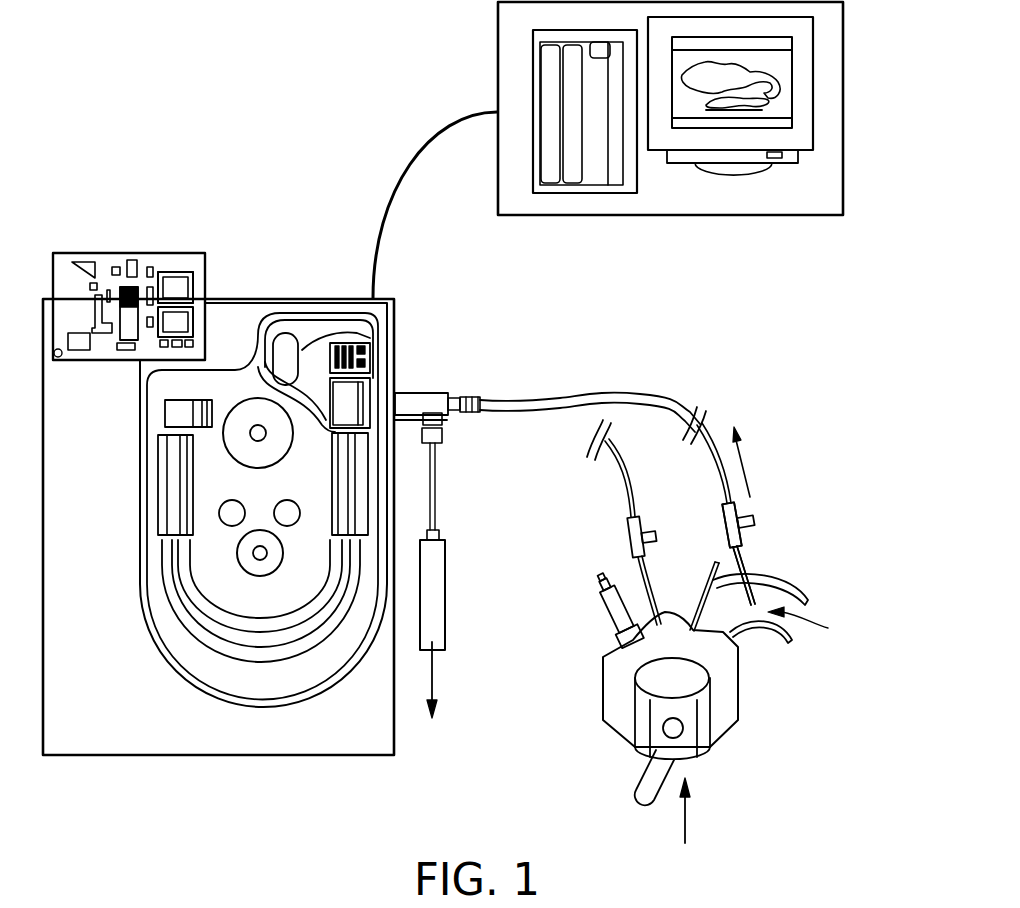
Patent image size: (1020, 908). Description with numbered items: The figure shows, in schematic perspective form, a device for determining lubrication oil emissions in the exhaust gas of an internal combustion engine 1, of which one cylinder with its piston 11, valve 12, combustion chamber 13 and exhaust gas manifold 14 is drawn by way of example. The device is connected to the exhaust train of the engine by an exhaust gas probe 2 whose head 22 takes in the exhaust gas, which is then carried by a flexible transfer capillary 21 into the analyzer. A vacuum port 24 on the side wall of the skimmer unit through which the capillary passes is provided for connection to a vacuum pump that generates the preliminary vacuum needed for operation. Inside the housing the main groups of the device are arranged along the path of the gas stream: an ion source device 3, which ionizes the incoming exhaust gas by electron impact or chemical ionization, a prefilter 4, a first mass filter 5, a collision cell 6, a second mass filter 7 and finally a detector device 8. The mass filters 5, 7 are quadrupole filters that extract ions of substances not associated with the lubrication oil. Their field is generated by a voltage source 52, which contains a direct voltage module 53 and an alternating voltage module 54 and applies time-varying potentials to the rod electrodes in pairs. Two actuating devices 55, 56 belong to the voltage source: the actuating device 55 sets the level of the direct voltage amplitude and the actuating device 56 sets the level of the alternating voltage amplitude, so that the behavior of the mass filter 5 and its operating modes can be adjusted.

The internal combustion engine 1 is at (687, 827).
The exhaust gas probe 2 is at (708, 392).
The ion source device 3 is at (368, 338).
The prefilter 4 is at (370, 393).
The first mass filter 5 is at (342, 503).
The collision cell 6 is at (288, 650).
The second mass filter 7 is at (172, 503).
The detector device 8 is at (165, 410).
The piston 11 is at (667, 743).
The valve 12 is at (693, 637).
The combustion chamber 13 is at (653, 653).
The exhaust gas manifold 14 is at (783, 610).
The flexible transfer capillary 21 is at (552, 400).
The head 22 is at (747, 567).
The vacuum port 24 is at (435, 682).
The voltage source 52 is at (115, 262).
The direct voltage module 53 is at (124, 300).
The alternating voltage module 54 is at (173, 272).
The actuating device 55 is at (738, 154).
The actuating device 56 is at (773, 160).